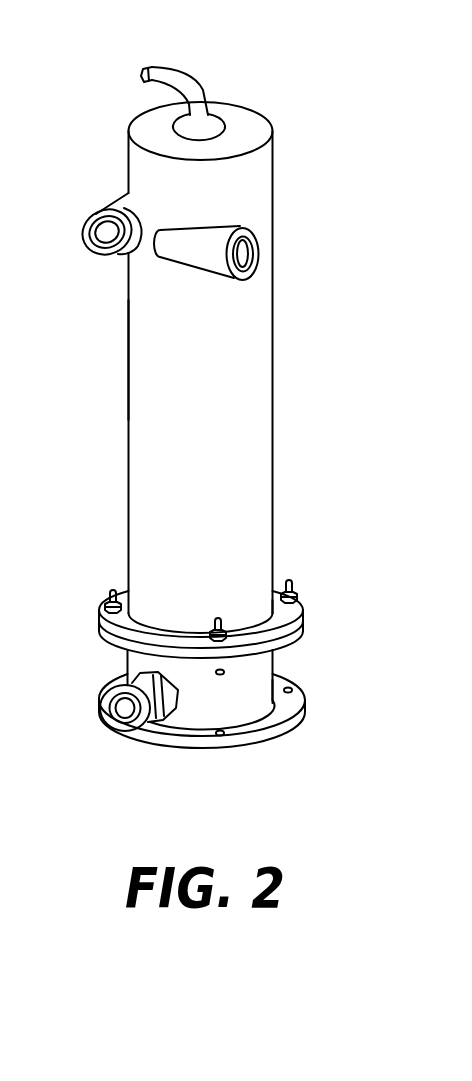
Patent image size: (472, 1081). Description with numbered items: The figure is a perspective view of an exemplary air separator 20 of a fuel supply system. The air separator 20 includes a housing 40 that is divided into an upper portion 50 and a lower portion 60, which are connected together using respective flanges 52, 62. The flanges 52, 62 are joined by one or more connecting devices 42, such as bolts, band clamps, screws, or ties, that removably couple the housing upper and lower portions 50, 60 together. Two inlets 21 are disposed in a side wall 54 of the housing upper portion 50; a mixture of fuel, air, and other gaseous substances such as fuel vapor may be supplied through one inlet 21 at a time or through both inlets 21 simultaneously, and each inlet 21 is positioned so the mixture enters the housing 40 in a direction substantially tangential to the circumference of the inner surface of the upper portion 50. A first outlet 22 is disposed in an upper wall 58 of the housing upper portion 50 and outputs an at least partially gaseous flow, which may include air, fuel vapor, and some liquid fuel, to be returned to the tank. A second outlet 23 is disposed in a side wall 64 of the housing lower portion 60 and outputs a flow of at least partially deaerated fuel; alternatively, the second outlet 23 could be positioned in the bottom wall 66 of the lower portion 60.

The air separator 20 is at (298, 93).
The inlet 21 is at (98, 212).
The first outlet 22 is at (165, 72).
The second outlet 23 is at (112, 682).
The housing 40 is at (332, 327).
The connecting device 42 is at (118, 602).
The upper portion 50 is at (273, 143).
The flange 52 is at (303, 617).
The side wall 54 is at (145, 315).
The upper wall 58 is at (243, 118).
The lower portion 60 is at (275, 661).
The flange 62 is at (303, 625).
The side wall 64 is at (240, 705).
The bottom wall 66 is at (303, 710).